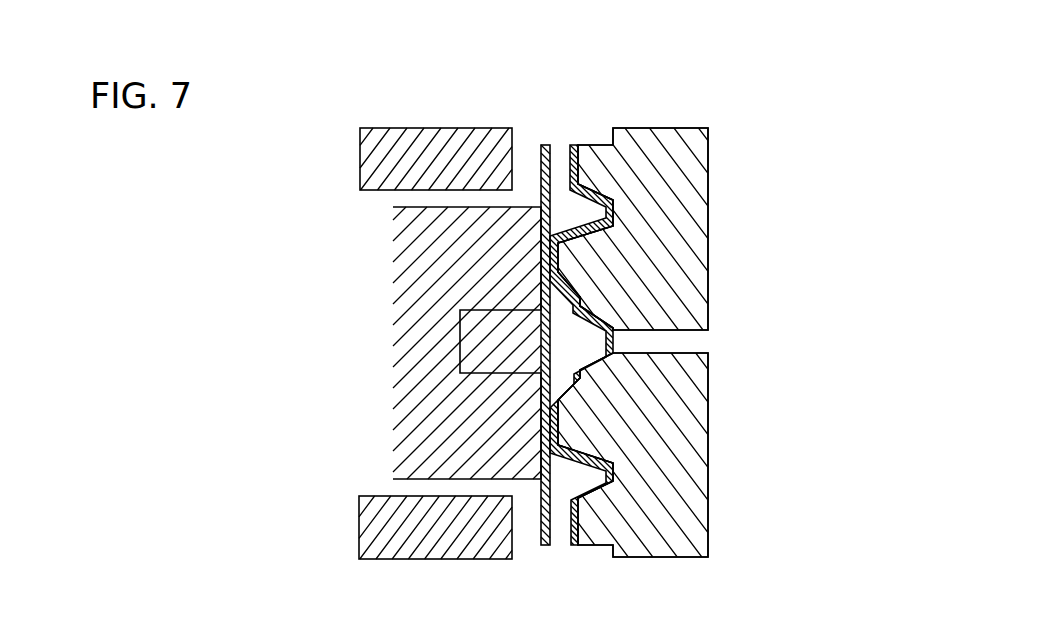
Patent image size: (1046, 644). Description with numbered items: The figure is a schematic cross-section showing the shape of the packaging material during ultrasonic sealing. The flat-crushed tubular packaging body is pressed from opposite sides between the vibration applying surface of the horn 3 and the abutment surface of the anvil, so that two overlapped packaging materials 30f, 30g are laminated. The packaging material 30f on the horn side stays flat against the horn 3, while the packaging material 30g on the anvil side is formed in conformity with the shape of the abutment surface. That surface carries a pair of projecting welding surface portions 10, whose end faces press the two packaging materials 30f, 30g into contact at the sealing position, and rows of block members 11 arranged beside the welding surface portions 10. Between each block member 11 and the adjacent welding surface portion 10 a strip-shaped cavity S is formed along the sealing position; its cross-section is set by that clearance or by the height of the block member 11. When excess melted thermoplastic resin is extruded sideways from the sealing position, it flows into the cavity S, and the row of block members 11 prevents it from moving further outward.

The horn 3 is at (435, 265).
The welding surface portion 10 is at (560, 263).
The block member 11 is at (583, 172).
The packaging material 30f is at (546, 143).
The packaging material 30g is at (572, 143).
The cavity S is at (582, 210).